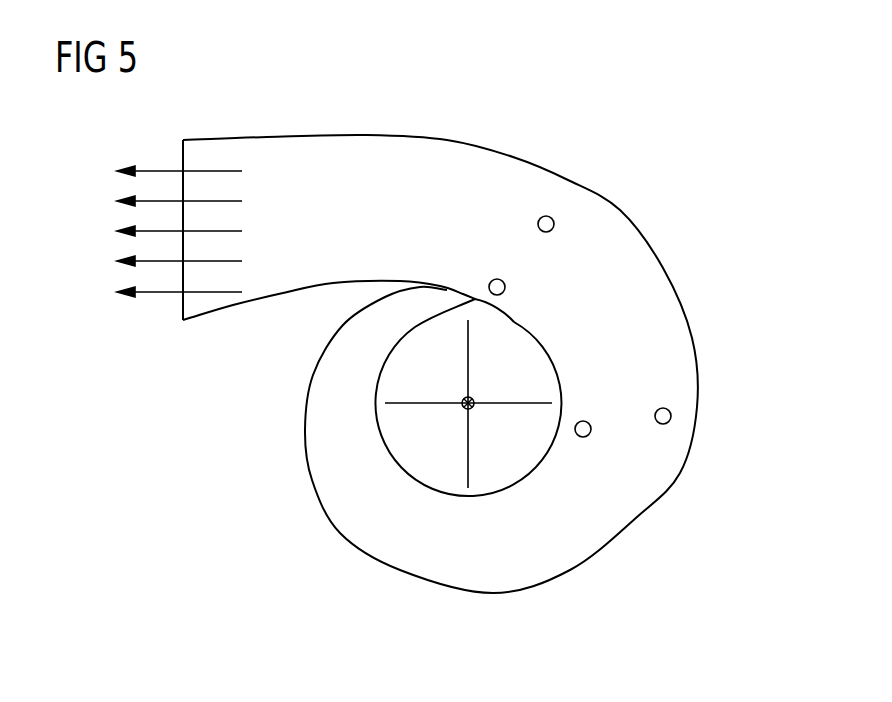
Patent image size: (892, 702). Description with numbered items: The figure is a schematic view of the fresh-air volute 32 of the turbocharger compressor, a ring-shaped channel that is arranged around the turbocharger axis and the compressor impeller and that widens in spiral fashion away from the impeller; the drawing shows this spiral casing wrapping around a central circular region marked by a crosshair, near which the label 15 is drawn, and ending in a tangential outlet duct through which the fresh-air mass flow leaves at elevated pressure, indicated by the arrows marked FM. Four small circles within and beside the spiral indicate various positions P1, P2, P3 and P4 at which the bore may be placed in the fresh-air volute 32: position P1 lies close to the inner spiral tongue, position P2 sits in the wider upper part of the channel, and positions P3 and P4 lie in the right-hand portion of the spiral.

The fresh-air volute 32 is at (607, 142).
The fan impeller axis / rotation center 15 is at (466, 410).
The position P1 is at (505, 285).
The position P2 is at (554, 222).
The position P3 is at (589, 434).
The position P4 is at (671, 414).